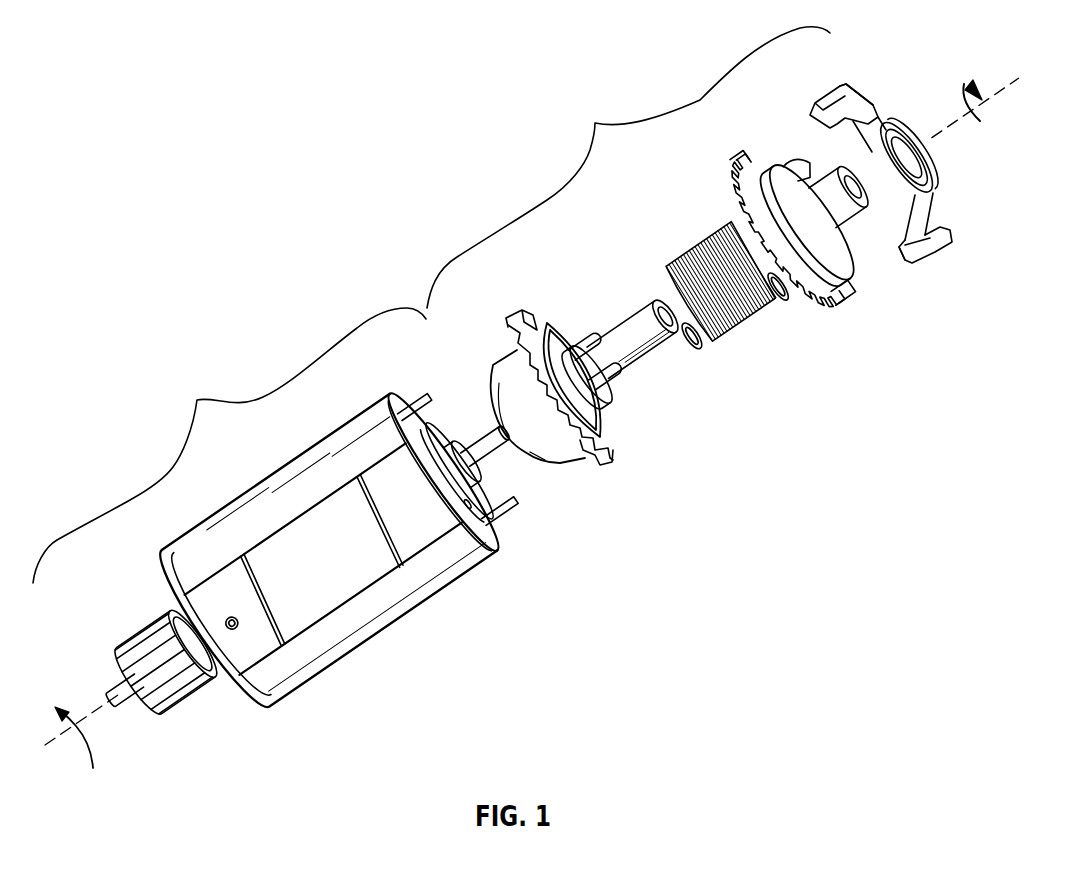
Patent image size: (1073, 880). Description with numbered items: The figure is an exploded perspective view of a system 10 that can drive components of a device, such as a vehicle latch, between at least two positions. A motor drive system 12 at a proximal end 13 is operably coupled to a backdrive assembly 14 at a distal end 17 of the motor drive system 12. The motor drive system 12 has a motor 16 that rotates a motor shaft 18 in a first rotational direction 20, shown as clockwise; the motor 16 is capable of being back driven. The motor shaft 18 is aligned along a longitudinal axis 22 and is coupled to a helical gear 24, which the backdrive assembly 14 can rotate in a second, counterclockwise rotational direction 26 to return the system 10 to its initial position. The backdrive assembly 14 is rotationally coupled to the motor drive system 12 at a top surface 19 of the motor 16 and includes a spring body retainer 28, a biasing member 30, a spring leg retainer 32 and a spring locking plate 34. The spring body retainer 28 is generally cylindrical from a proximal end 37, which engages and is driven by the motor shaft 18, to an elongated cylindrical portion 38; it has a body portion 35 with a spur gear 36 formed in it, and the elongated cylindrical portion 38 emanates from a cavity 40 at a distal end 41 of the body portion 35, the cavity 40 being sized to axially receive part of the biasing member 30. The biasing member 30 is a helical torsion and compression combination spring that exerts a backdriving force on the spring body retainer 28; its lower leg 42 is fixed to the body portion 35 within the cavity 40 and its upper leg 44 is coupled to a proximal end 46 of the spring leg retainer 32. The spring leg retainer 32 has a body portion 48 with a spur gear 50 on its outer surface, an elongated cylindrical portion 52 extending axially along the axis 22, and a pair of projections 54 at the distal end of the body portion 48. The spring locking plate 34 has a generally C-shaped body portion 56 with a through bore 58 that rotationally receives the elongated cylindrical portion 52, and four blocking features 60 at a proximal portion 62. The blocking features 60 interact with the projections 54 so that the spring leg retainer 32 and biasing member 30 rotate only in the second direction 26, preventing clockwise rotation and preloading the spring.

The system 10 is at (297, 184).
The motor drive system 12 is at (229, 445).
The proximal end 13 is at (139, 567).
The backdrive assembly 14 is at (628, 167).
The motor 16 is at (420, 583).
The distal end 17 is at (518, 537).
The motor shaft 18 is at (120, 683).
The top surface 19 is at (415, 406).
The first rotational direction 20 is at (84, 753).
The longitudinal axis 22 is at (1011, 87).
The helical gear 24 is at (182, 697).
The second rotational direction 26 is at (963, 82).
The spring body retainer 28 is at (510, 320).
The biasing member 30 is at (690, 250).
The spring leg retainer 32 is at (773, 160).
The spring locking plate 34 is at (820, 105).
The body portion 35 is at (503, 362).
The spur gear 36 is at (590, 464).
The proximal end 37 is at (528, 455).
The elongated cylindrical portion 38 is at (628, 330).
The cavity 40 is at (625, 420).
The distal end 41 is at (546, 326).
The lower leg 42 is at (695, 348).
The upper leg 44 is at (778, 300).
The proximal end 46 is at (738, 210).
The body portion 48 is at (845, 288).
The spur gear 50 is at (742, 162).
The elongated cylindrical portion 52 is at (832, 182).
The projections 54 is at (798, 175).
The body portion 56 is at (878, 100).
The through bore 58 is at (907, 135).
The blocking features 60 is at (898, 242).
The proximal portion 62 is at (892, 192).